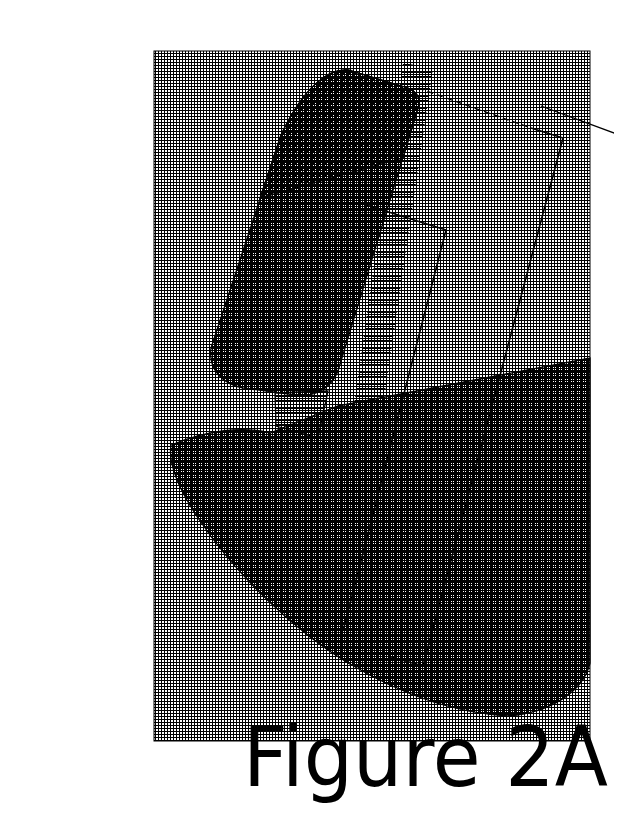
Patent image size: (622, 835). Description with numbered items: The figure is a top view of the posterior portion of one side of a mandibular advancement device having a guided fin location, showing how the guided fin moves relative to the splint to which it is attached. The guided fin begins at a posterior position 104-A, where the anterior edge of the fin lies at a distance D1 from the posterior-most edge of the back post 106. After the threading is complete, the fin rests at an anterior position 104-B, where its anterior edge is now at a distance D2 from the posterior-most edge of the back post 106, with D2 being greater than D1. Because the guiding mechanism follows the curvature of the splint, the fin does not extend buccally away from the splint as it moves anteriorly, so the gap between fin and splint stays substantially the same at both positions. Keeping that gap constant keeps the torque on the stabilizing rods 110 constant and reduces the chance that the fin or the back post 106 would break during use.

The posterior position 104-A is at (253, 237).
The anterior position 104-B is at (273, 147).
The back post 106 is at (230, 498).
The stabilizing rods 110 is at (227, 395).
The distance D1 is at (388, 423).
The distance D2 is at (487, 395).